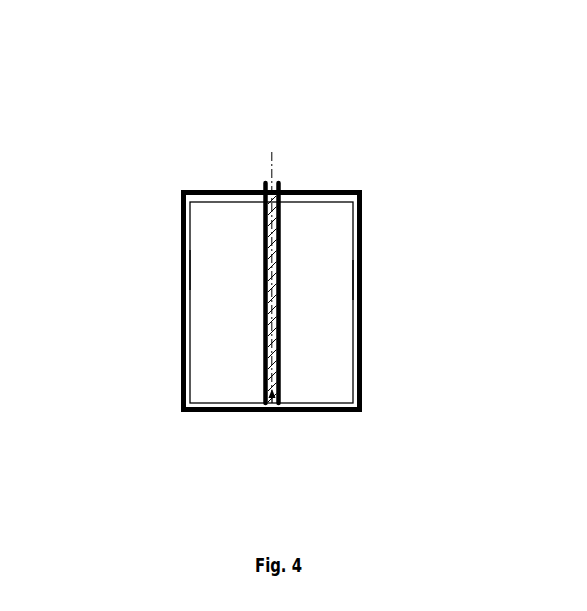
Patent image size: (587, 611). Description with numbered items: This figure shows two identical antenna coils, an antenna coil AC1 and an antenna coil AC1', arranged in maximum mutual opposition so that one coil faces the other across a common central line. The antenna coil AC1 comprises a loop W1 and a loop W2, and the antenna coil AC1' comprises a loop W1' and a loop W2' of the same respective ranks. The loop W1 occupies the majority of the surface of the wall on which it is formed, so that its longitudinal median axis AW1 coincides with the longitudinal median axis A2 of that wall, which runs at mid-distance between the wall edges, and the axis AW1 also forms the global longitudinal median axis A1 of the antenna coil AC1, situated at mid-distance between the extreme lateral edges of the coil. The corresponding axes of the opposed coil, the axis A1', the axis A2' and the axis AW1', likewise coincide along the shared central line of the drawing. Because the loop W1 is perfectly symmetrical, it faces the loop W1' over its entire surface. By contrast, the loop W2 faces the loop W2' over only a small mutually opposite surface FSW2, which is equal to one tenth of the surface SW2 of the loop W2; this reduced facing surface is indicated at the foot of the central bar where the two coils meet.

The antenna coil AC1' is at (148, 286).
The antenna coil AC1 is at (390, 281).
The loop W1' is at (150, 229).
The loop W1 is at (386, 238).
The loop W2' is at (154, 269).
The loop W2 is at (382, 278).
The global longitudinal median axis A1 is at (153, 264).
The central separating bar / partition element A1' is at (153, 264).
The longitudinal median axis A2 is at (153, 264).
The central separating bar / partition element A2' is at (153, 264).
The longitudinal median axis AW1 is at (153, 264).
The central separating bar / partition element AW1' is at (153, 264).
The mutually opposite surface FSW2 is at (350, 424).
The surface SW2 is at (272, 412).